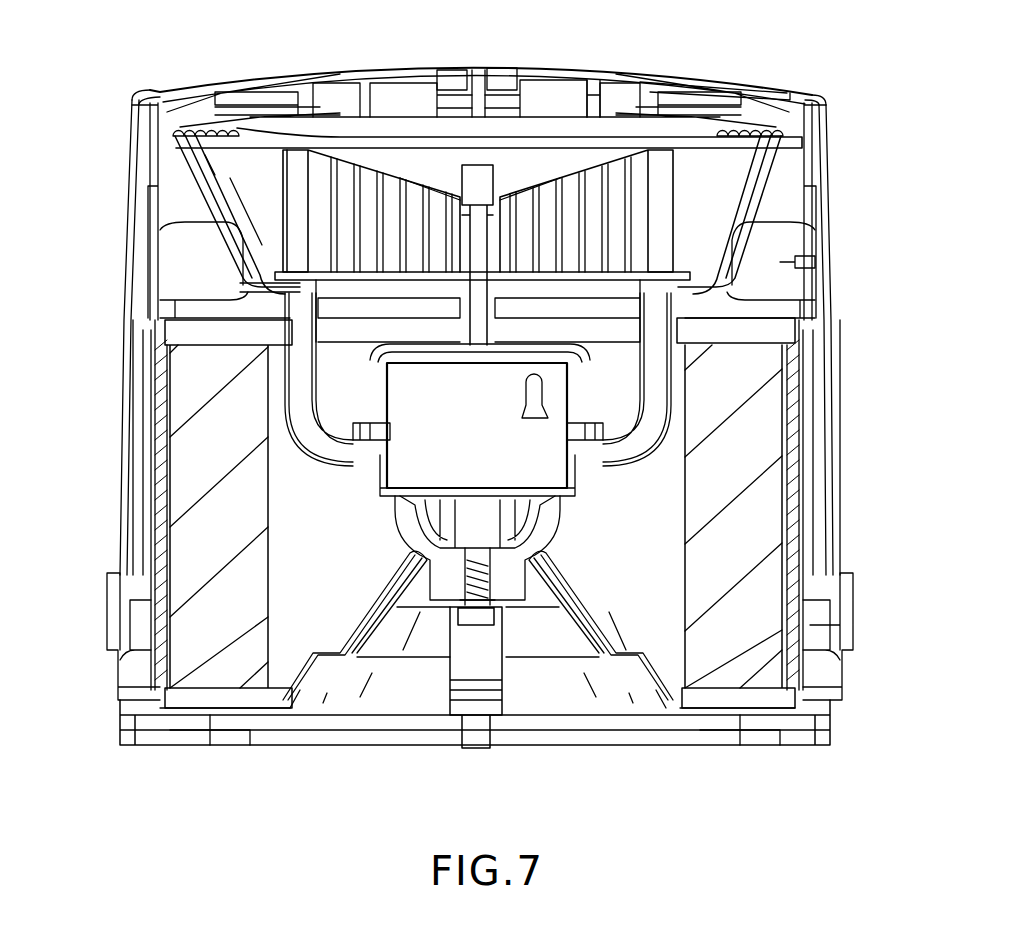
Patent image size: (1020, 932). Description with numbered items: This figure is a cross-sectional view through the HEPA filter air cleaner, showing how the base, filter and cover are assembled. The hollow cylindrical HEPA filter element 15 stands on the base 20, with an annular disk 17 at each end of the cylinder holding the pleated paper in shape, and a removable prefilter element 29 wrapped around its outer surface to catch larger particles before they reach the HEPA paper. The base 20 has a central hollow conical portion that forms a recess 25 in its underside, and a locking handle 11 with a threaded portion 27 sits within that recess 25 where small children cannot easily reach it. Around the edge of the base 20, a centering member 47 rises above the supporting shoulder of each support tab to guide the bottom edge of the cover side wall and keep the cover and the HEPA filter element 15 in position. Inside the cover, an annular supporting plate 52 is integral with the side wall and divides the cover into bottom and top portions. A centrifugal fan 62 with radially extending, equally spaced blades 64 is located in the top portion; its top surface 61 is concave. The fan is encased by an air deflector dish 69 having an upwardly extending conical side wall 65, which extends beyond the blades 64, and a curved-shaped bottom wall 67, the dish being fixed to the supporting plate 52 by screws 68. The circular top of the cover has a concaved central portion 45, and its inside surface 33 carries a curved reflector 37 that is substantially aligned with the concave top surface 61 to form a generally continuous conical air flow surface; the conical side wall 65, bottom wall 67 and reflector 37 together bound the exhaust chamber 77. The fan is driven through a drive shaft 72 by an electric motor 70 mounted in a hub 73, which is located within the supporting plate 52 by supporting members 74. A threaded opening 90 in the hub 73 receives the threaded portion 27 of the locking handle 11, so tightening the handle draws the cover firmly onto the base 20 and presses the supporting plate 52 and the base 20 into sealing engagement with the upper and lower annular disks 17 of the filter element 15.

The locking handle 11 is at (495, 705).
The HEPA filter element 15 is at (150, 504).
The annular disks 17 is at (165, 338).
The base 20 is at (155, 745).
The recess 25 is at (558, 648).
The threaded portion 27 is at (405, 578).
The prefilter element 29 is at (151, 547).
The inside surface 33 is at (790, 140).
The reflector 37 is at (178, 122).
The concaved central portion 45 is at (680, 125).
The centering member 47 is at (822, 640).
The annular supporting plate 52 is at (785, 302).
The top surface 61 is at (600, 165).
The centrifugal fan 62 is at (300, 150).
The blades 64 is at (680, 163).
The conical side wall 65 is at (180, 178).
The bottom wall 67 is at (240, 290).
The screws 68 is at (805, 262).
The air deflector dish 69 is at (775, 198).
The electric motor 70 is at (488, 444).
The drive shaft 72 is at (402, 358).
The hub 73 is at (540, 515).
The supporting members 74 is at (332, 455).
The exhaust chamber 77 is at (260, 198).
The threaded opening 90 is at (492, 560).